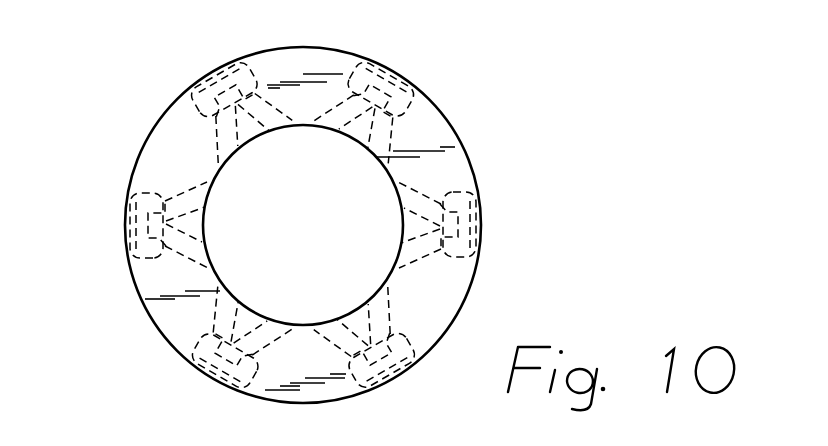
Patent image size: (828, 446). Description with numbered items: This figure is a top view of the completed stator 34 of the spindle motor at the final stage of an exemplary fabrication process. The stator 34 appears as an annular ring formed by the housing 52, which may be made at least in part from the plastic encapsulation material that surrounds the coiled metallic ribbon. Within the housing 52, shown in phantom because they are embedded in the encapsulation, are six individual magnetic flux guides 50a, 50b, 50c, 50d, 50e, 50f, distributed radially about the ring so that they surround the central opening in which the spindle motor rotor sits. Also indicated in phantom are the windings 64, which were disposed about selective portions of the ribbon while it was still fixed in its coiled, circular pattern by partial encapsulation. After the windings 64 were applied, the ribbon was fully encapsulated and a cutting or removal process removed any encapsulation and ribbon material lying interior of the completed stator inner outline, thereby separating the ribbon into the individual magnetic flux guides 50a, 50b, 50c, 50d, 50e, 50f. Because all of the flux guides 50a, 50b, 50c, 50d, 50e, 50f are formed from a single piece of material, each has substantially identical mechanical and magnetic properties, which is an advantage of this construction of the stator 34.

The stator 34 is at (100, 127).
The housing 52 is at (457, 295).
The windings 64 is at (190, 93).
The magnetic flux guide 50a is at (485, 222).
The magnetic flux guide 50b is at (393, 66).
The magnetic flux guide 50c is at (217, 78).
The magnetic flux guide 50d is at (135, 225).
The magnetic flux guide 50e is at (213, 389).
The magnetic flux guide 50f is at (392, 381).